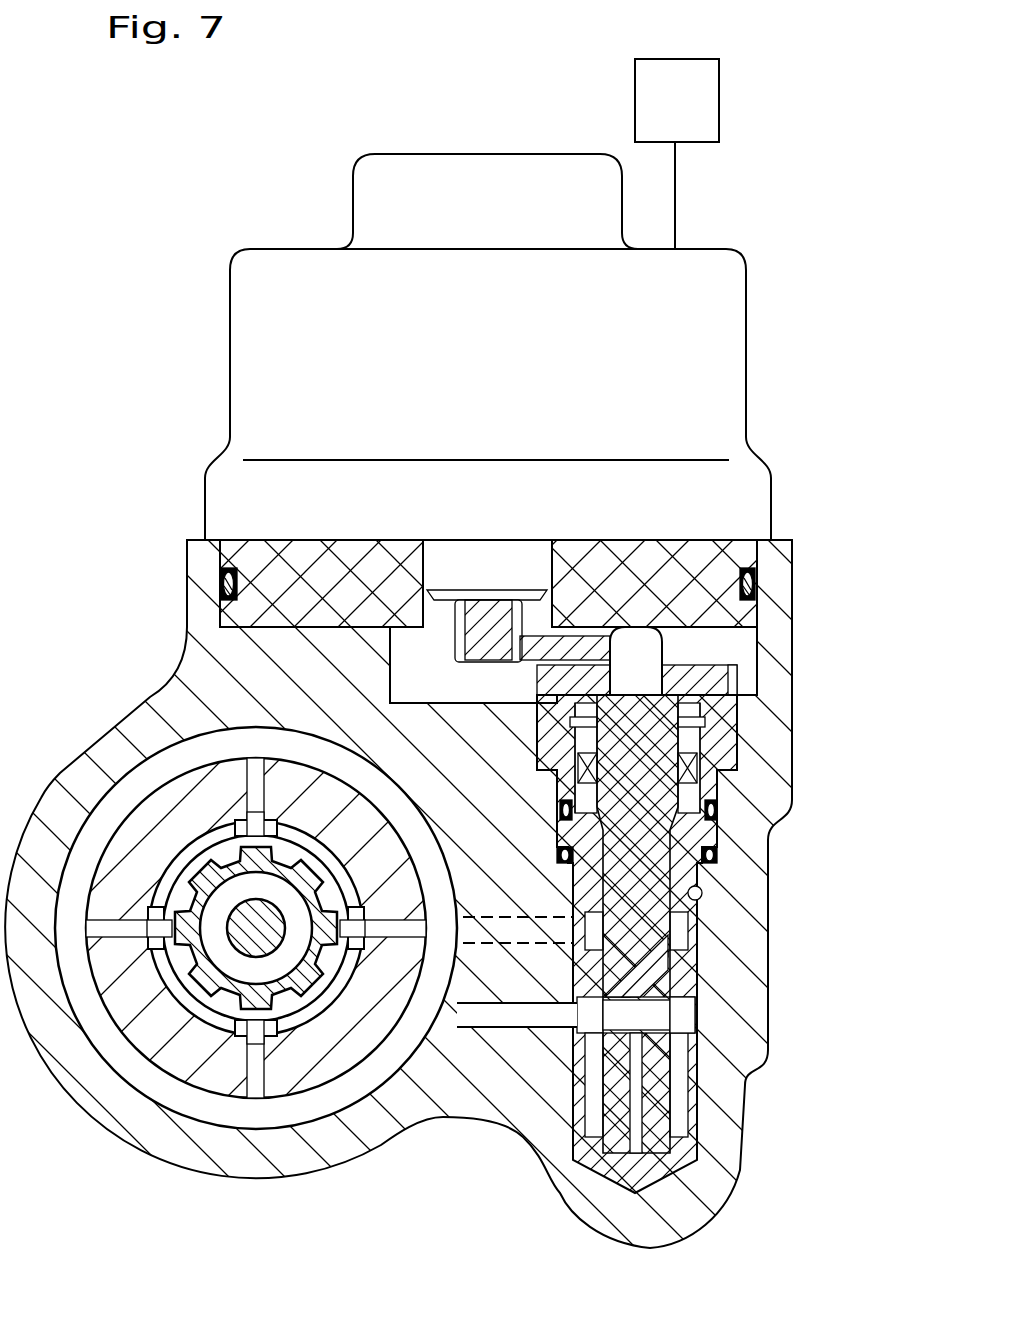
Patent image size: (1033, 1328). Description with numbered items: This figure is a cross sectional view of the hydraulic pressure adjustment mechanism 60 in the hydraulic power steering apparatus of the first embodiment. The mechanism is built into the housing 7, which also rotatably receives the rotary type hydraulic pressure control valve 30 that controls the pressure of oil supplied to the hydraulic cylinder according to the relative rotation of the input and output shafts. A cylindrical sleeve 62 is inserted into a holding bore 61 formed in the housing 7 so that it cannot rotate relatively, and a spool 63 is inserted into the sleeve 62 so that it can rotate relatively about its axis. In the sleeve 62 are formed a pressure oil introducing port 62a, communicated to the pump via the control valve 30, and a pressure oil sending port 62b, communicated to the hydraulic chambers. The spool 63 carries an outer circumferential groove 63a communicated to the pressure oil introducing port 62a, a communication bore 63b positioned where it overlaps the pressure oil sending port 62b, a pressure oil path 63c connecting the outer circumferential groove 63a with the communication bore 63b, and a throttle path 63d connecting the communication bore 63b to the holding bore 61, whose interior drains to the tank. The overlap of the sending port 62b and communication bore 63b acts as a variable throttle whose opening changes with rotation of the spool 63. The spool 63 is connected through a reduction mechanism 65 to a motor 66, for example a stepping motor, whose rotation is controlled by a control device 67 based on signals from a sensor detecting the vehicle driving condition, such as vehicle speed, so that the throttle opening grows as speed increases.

The housing 7 is at (463, 1095).
The hydraulic pressure control valve 30 is at (203, 1087).
The hydraulic pressure adjustment mechanism 60 is at (718, 823).
The holding bore 61 is at (608, 930).
The sleeve 62 is at (692, 963).
The pressure oil introducing port 62a is at (678, 930).
The pressure oil sending port 62b is at (678, 1025).
The spool 63 is at (657, 1123).
The outer circumferential groove 63a is at (702, 890).
The communication bore 63b is at (657, 1010).
The pressure oil path 63c is at (638, 968).
The throttle path 63d is at (637, 1098).
The reduction mechanism 65 is at (740, 687).
The motor 66 is at (723, 410).
The control device 67 is at (700, 94).